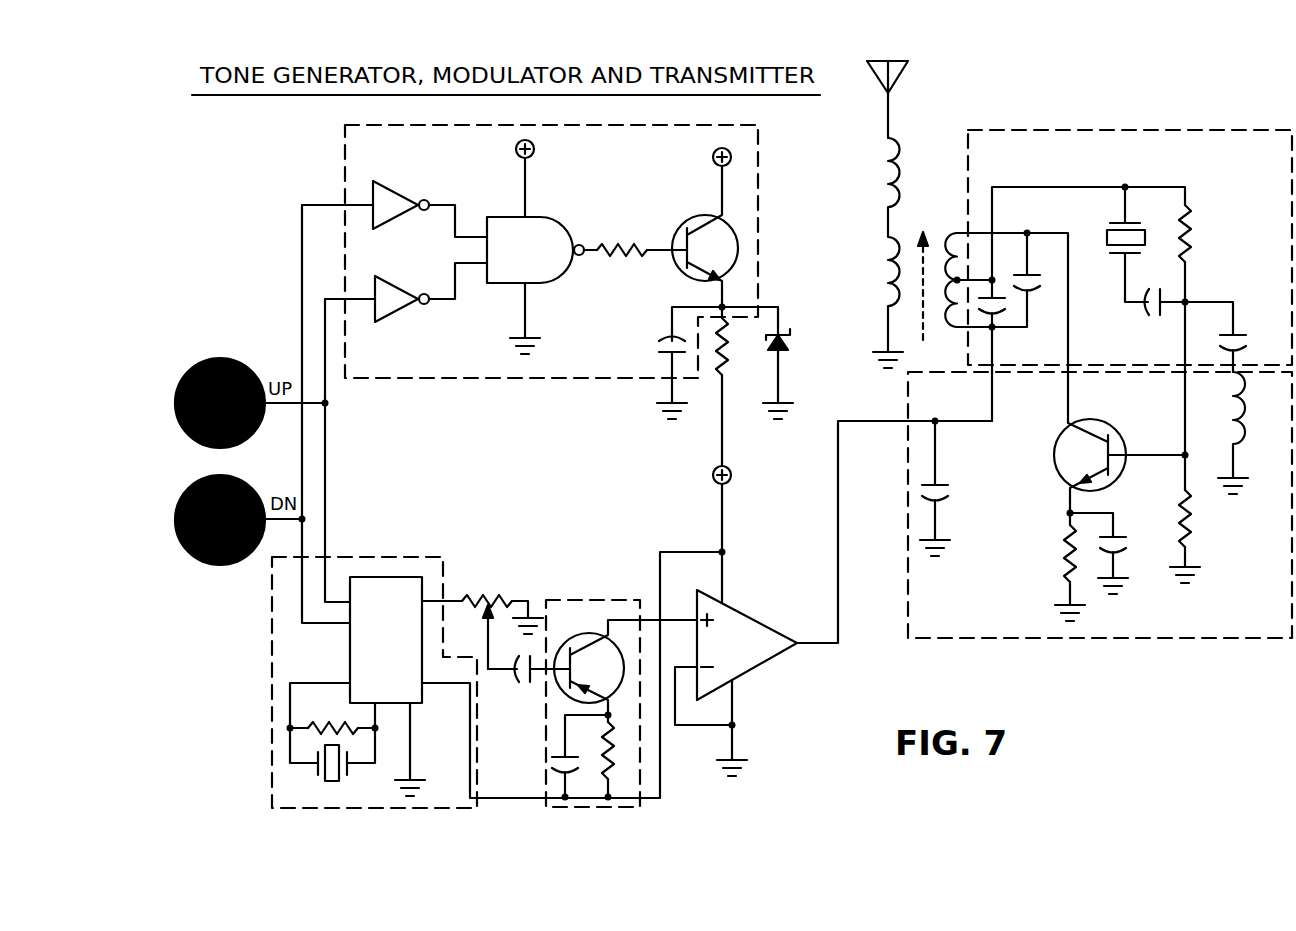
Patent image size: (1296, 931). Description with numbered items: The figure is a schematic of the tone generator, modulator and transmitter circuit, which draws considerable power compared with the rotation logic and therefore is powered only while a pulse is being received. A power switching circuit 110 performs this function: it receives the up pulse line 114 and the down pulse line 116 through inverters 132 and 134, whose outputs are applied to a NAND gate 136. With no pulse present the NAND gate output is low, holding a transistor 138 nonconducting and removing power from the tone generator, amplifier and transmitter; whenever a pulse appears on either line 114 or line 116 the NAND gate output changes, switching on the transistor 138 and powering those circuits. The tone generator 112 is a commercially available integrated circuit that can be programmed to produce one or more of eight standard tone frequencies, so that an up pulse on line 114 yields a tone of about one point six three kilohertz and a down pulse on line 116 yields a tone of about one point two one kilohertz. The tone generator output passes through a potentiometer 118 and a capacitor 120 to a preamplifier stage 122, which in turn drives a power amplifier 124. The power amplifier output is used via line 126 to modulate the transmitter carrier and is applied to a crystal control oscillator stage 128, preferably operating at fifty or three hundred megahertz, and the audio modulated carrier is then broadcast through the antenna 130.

The power switching circuit 110 is at (345, 158).
The tone generator 112 is at (412, 556).
The line 114 is at (328, 461).
The line 116 is at (300, 315).
The potentiometer 118 is at (492, 605).
The capacitor 120 is at (519, 678).
The preamplifier stage 122 is at (610, 600).
The power amplifier 124 is at (750, 677).
The line 126 is at (835, 497).
The crystal control oscillator stage 128 is at (1180, 130).
The antenna 130 is at (902, 78).
The inverter 132 is at (403, 213).
The inverter 134 is at (388, 318).
The NAND gate 136 is at (497, 216).
The transistor 138 is at (686, 218).